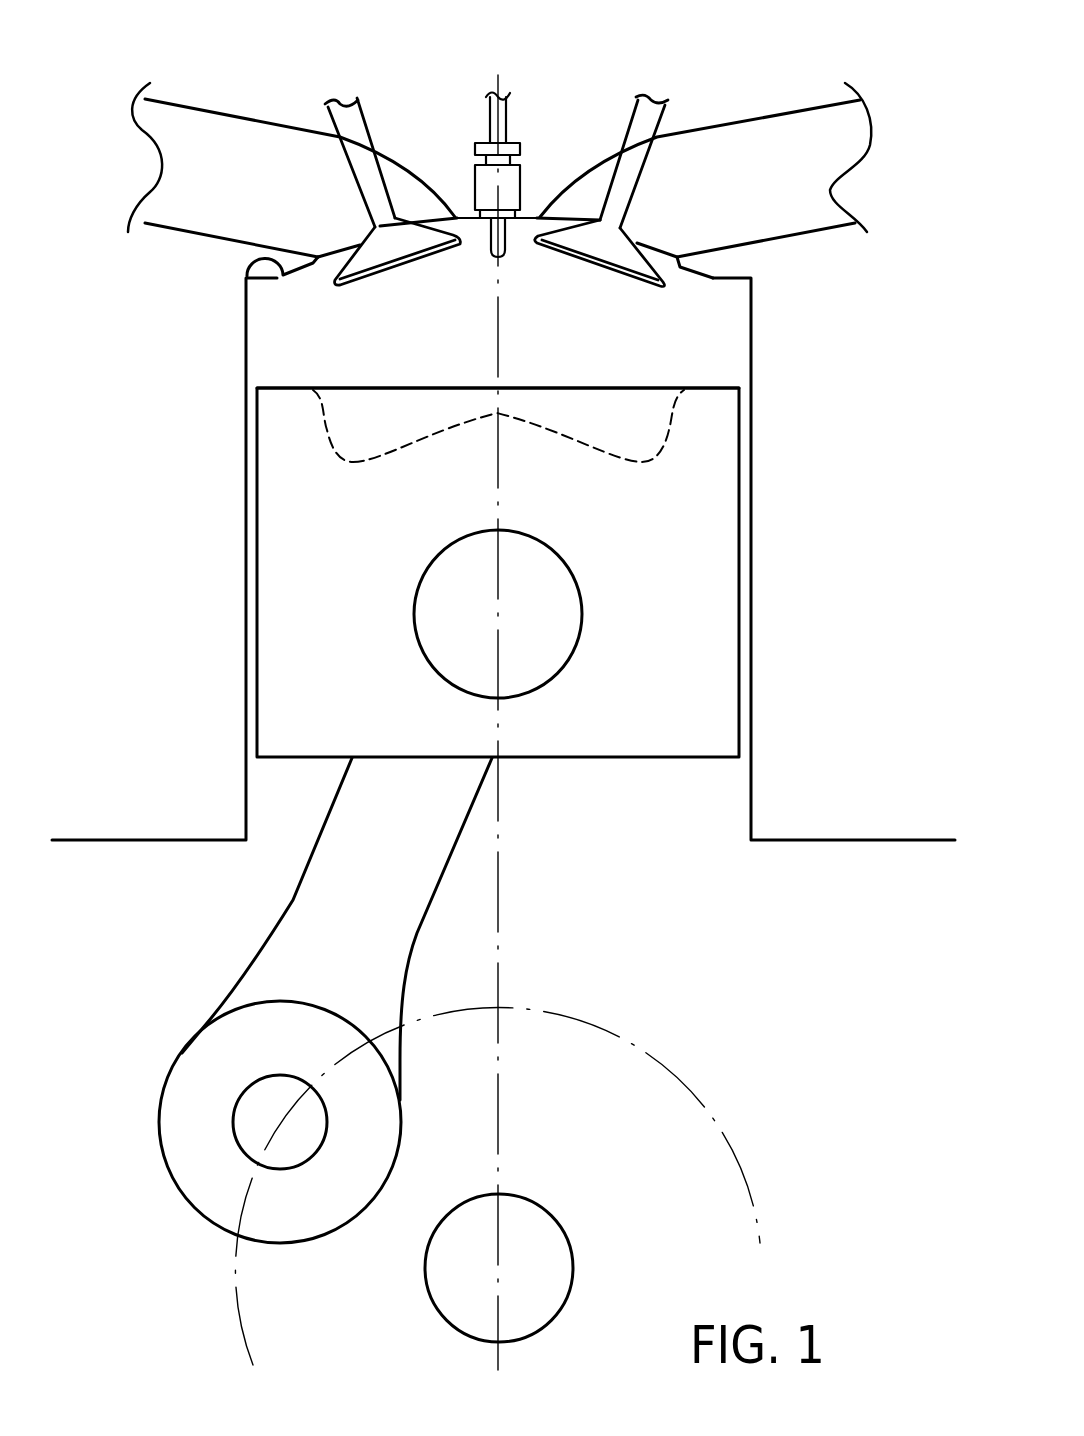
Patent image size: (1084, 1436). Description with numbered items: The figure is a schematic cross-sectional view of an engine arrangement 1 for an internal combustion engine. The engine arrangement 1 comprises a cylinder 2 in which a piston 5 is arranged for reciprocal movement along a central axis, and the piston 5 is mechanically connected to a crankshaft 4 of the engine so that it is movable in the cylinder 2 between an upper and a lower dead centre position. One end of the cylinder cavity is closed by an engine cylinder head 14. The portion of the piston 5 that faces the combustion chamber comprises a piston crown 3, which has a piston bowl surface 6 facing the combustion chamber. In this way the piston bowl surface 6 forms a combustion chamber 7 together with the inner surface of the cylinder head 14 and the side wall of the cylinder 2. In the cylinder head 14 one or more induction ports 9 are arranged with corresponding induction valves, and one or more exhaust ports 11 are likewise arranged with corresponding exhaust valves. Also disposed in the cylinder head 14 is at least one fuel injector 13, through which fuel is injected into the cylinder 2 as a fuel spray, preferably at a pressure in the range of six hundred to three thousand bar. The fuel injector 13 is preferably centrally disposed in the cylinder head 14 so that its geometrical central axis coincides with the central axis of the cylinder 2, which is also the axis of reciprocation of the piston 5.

The engine arrangement 1 is at (636, 52).
The cylinder 2 is at (751, 351).
The piston crown 3 is at (707, 423).
The crankshaft 4 is at (725, 1132).
The piston 5 is at (676, 592).
The piston bowl surface 6 is at (622, 432).
The combustion chamber 7 is at (373, 430).
The induction port 9 is at (762, 118).
The exhaust port 11 is at (238, 118).
The fuel injector 13 is at (495, 256).
The engine cylinder head 14 is at (253, 267).